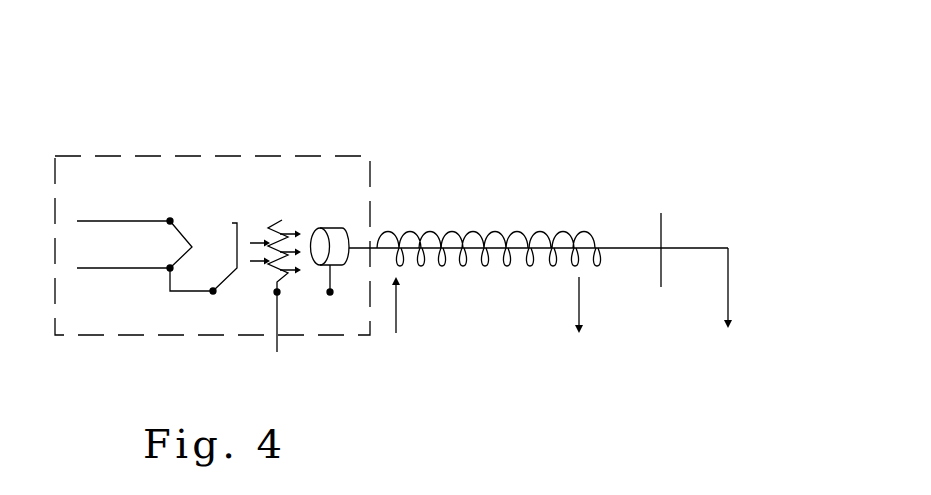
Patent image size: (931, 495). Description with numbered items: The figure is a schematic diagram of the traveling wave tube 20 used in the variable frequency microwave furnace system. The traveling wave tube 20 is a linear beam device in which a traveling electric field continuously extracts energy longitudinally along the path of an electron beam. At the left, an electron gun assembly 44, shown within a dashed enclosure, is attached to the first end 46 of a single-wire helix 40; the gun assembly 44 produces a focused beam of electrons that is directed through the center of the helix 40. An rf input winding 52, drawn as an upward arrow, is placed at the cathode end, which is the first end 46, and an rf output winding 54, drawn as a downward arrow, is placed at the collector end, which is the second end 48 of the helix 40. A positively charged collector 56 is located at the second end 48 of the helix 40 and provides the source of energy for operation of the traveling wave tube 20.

The traveling wave tube 20 is at (157, 59).
The electron gun assembly 44 is at (285, 157).
The single-wire helix 40 is at (463, 232).
The first end 46 is at (393, 230).
The second end 48 is at (563, 230).
The rf input winding 52 is at (396, 313).
The rf output winding 54 is at (579, 313).
The collector 56 is at (661, 228).